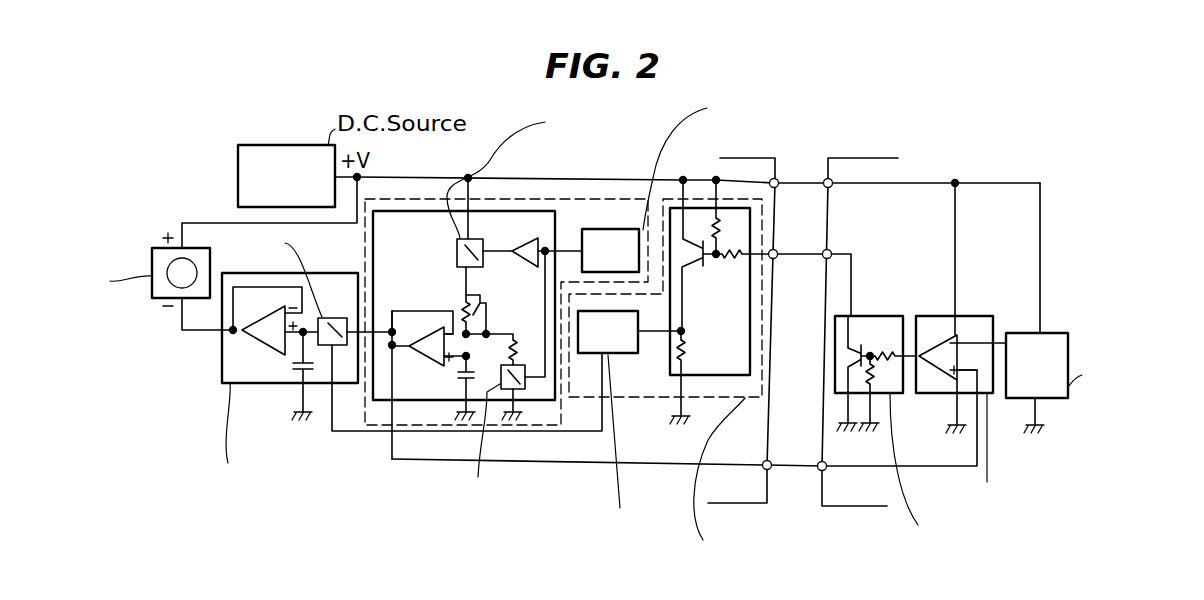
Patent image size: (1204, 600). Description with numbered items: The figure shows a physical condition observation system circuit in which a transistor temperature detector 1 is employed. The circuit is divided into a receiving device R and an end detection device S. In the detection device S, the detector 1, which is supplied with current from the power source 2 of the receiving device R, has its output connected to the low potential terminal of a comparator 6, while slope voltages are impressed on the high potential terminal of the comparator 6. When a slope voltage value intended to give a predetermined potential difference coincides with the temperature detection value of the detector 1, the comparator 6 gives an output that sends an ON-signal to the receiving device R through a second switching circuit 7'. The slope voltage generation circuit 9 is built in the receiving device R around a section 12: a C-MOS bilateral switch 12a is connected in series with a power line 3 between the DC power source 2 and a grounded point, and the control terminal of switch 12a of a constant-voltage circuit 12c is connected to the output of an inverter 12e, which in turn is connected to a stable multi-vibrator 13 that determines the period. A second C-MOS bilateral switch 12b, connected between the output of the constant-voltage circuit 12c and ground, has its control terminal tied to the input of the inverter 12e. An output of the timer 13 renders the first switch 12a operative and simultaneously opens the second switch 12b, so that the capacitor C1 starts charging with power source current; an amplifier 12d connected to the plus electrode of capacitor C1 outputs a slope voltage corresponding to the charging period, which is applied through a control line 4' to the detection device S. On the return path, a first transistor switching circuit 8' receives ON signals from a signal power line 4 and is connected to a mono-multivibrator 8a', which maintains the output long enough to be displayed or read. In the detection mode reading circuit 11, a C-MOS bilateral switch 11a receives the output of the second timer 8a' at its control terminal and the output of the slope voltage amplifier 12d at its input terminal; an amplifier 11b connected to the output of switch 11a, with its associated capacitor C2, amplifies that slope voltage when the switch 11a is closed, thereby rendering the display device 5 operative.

The transistor temperature detector 1 is at (1018, 402).
The power source 2 is at (283, 145).
The power line 3 is at (800, 180).
The signal power line 4 is at (800, 276).
The control line 4' is at (795, 493).
The display device 5 is at (152, 293).
The comparator 6 is at (928, 395).
The second switching circuit 7' is at (903, 444).
The first transistor switching circuit 8' is at (710, 372).
The mono-multivibrator 8a' is at (604, 423).
The slope voltage generation circuit 9 is at (570, 198).
The detection mode reading circuit 11 is at (218, 374).
The C-MOS bilateral switch 11a is at (325, 318).
The amplifier 11b is at (272, 350).
The slope voltage generation circuit section 12 is at (483, 211).
The C-MOS bilateral switch 12a is at (456, 249).
The C-MOS bilateral switch 12b is at (528, 400).
The constant-voltage circuit 12c is at (492, 313).
The amplifier 12d is at (423, 327).
The inverter 12e is at (522, 263).
The stable multi-vibrator 13 is at (606, 212).
The capacitor C1 is at (458, 375).
The capacitor C2 is at (278, 385).
The receiving device R is at (737, 158).
The end detection device S is at (860, 158).